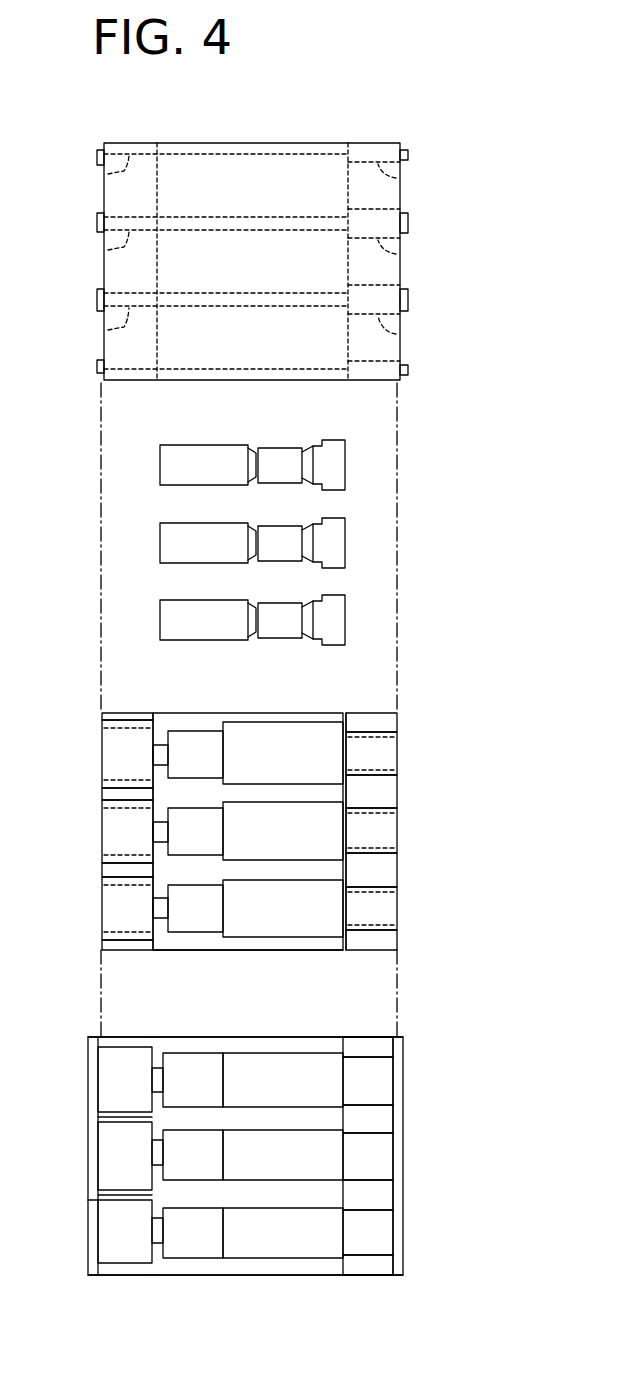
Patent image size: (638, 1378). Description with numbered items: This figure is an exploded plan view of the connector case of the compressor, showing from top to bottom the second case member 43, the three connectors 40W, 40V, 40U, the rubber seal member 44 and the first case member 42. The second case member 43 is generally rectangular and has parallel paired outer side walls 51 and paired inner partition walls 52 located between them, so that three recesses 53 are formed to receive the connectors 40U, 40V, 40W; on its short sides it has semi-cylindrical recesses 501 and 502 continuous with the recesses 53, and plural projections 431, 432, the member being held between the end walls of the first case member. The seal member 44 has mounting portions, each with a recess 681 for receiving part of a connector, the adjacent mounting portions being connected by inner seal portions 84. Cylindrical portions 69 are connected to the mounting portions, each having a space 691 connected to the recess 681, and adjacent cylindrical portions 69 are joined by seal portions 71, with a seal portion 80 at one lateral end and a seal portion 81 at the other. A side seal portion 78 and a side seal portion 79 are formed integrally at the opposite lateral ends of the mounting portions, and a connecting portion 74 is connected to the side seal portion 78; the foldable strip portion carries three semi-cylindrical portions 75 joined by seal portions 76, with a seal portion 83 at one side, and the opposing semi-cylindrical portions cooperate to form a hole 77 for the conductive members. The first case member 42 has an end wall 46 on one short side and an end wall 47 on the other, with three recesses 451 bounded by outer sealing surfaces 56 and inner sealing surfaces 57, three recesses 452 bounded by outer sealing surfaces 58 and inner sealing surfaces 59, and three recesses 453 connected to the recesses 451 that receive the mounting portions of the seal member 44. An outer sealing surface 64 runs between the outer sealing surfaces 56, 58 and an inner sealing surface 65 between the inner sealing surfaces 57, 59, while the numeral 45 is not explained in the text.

The second case member 43 is at (495, 259).
The projection 431 is at (96, 157).
The projection 432 is at (409, 155).
The recess 501 is at (108, 174).
The recess 502 is at (396, 178).
The outer side wall 51 is at (216, 143).
The inner partition wall 52 is at (230, 208).
The recess 53 is at (346, 184).
The connector 40W is at (212, 487).
The connector 40V is at (212, 565).
The connector 40U is at (212, 642).
The seal member 44 is at (488, 833).
The side seal portion 78 is at (264, 713).
The side seal portion 79 is at (246, 951).
The seal portion 80 is at (120, 714).
The seal portion 81 is at (120, 950).
The cylindrical portion 69 is at (112, 760).
The space 691 is at (116, 730).
The seal portion 71 is at (114, 794).
The recess 681 is at (192, 742).
The inner seal portion 84 is at (252, 805).
The connecting portion 74 is at (399, 720).
The seal portion 83 is at (399, 942).
The semi-cylindrical portion 75 is at (388, 762).
The seal portion 76 is at (390, 790).
The hole 77 is at (386, 737).
The first case member 42 is at (488, 1139).
The outer sealing surface 64 is at (290, 1035).
The case lower edge 45 is at (290, 1252).
The outer sealing surface 56 is at (126, 1035).
The outer sealing surface 58 is at (364, 1035).
The recess 451 is at (110, 1071).
The inner sealing surface 57 is at (106, 1117).
The end wall 46 is at (90, 1208).
The recess 453 is at (190, 1062).
The inner sealing surface 65 is at (274, 1108).
The recess 452 is at (388, 1077).
The inner sealing surface 59 is at (388, 1117).
The end wall 47 is at (396, 1192).